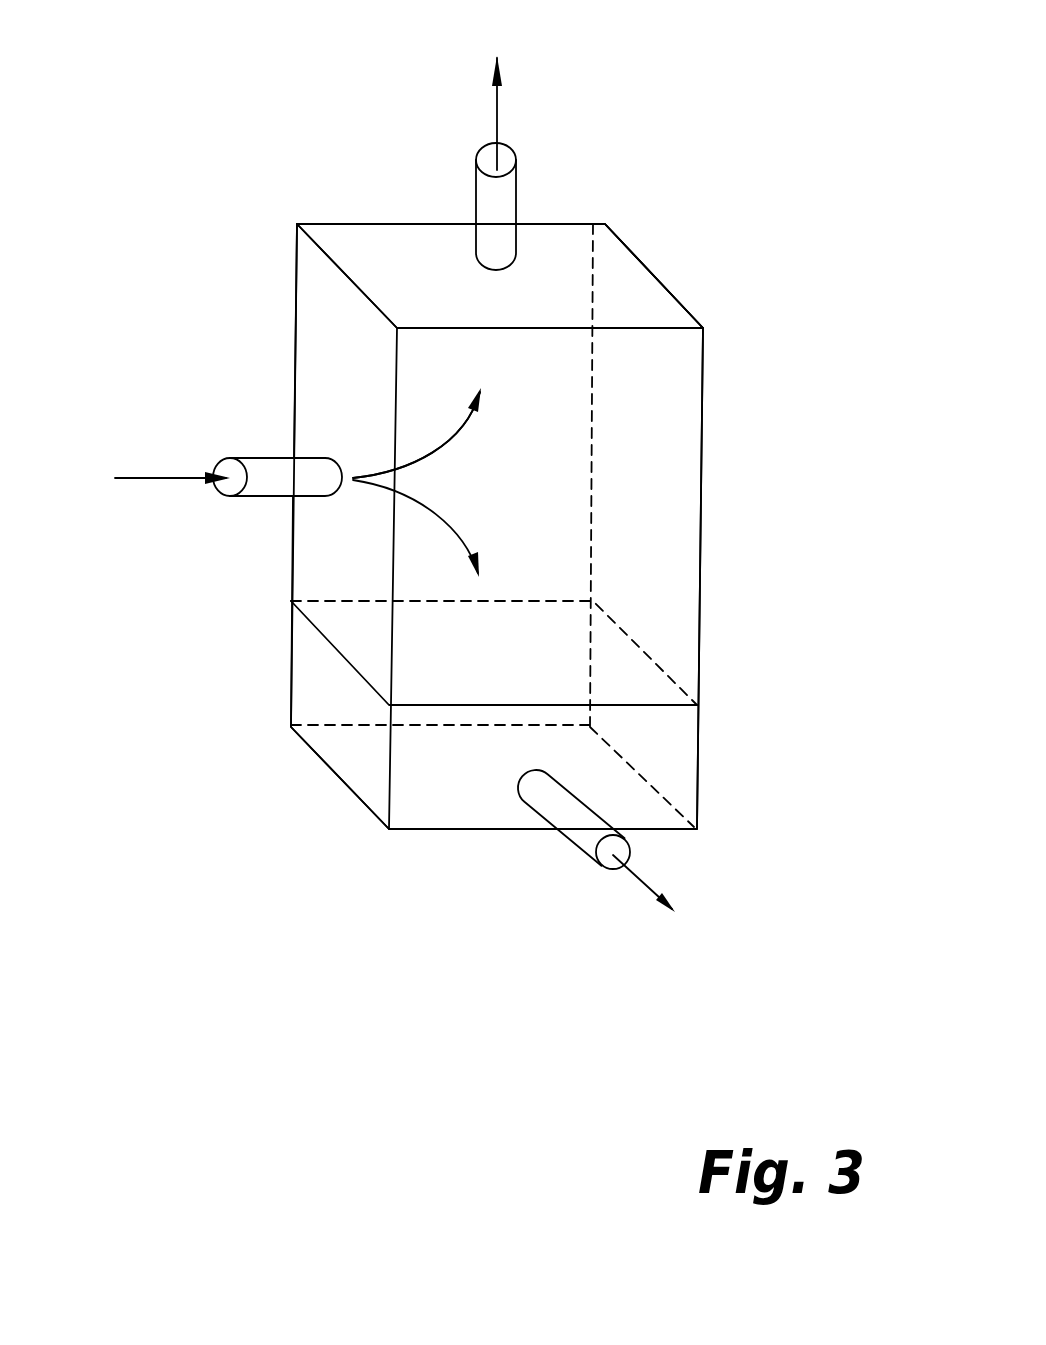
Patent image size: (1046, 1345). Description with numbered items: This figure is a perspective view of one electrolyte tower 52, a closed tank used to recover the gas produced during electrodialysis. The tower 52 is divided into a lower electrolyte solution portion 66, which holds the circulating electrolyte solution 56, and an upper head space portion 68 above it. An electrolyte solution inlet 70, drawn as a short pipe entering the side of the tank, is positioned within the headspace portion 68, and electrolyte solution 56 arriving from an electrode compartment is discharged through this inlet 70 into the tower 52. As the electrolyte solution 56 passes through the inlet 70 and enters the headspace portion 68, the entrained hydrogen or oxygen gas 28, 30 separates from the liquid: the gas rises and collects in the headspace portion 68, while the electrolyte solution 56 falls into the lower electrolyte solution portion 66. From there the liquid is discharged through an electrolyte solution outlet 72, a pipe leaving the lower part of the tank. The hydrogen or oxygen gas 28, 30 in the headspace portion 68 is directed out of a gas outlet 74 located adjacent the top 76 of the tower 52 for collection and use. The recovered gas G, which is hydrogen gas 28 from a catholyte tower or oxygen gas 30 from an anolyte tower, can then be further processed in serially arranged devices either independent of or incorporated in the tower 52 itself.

The electrolyte tower 52 is at (287, 103).
The electrolyte solution 56 is at (148, 478).
The hydrogen gas 28 is at (527, 267).
The oxygen gas 30 is at (498, 115).
The lower electrolyte solution portion 66 is at (700, 752).
The upper head space portion 68 is at (702, 498).
The electrolyte solution inlet 70 is at (258, 498).
The electrolyte solution outlet 72 is at (572, 842).
The gas outlet 74 is at (517, 202).
The top 76 is at (643, 292).
The recovered gas G is at (350, 480).